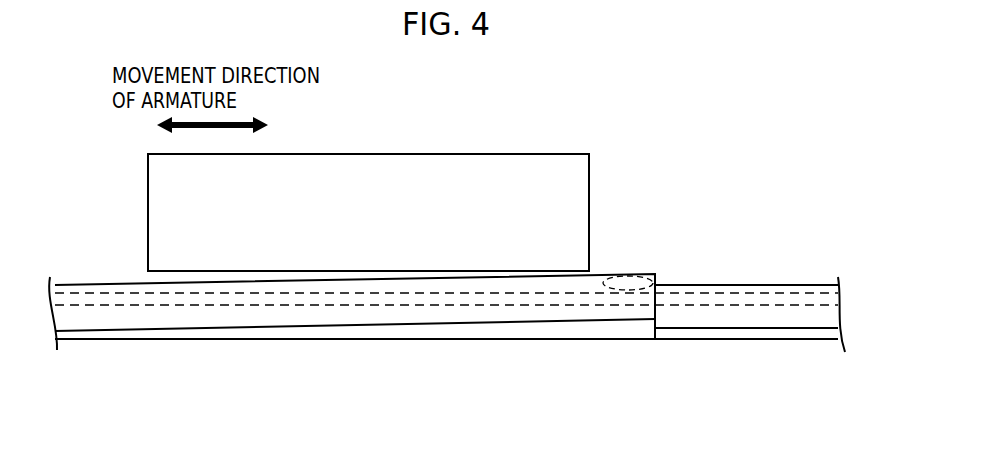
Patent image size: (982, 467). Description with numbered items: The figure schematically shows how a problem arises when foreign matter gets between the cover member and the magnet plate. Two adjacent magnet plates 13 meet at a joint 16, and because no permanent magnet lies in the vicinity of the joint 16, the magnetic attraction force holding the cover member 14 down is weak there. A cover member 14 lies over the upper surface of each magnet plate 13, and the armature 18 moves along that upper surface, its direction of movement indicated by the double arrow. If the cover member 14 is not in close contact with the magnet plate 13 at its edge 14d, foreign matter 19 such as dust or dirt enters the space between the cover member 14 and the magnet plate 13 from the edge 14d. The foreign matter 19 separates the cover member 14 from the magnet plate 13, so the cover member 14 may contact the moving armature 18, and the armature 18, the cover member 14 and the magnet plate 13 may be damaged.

The magnet plate 13 is at (415, 333).
The cover member 14 is at (86, 284).
The edge 14d is at (655, 300).
The joint 16 is at (655, 340).
The armature 18 is at (410, 197).
The foreign matter 19 is at (630, 280).